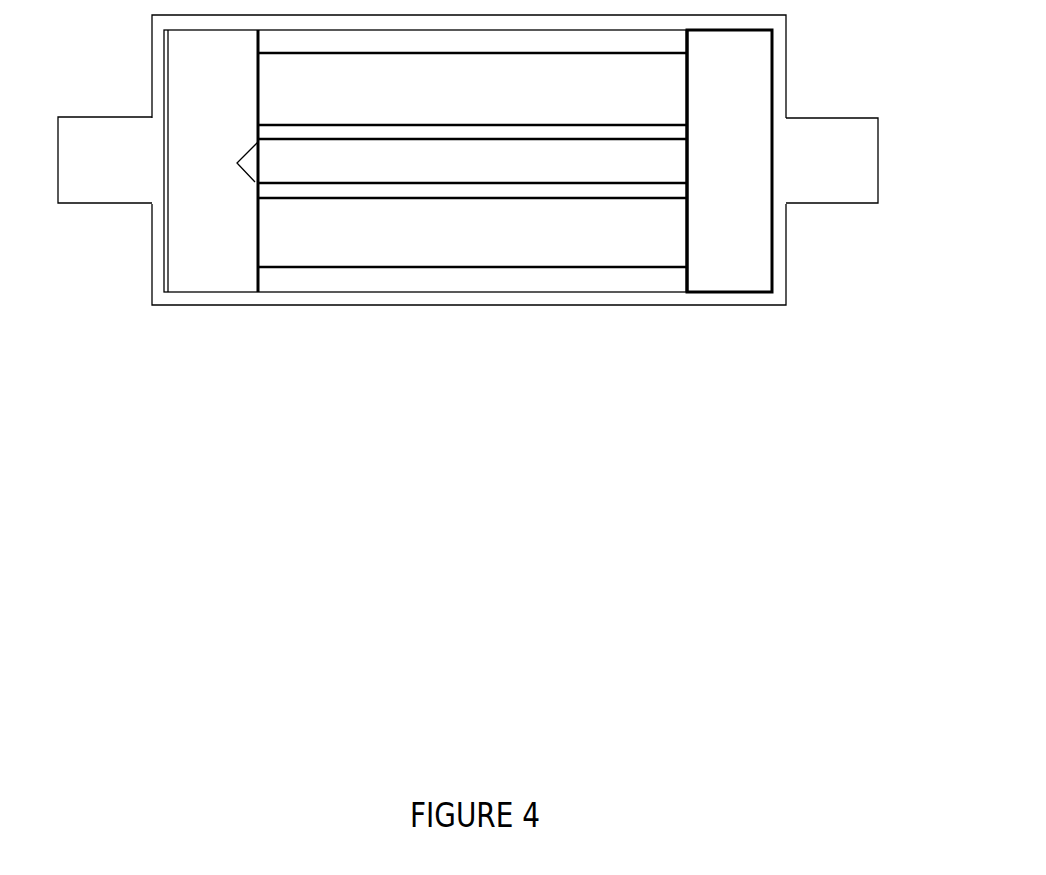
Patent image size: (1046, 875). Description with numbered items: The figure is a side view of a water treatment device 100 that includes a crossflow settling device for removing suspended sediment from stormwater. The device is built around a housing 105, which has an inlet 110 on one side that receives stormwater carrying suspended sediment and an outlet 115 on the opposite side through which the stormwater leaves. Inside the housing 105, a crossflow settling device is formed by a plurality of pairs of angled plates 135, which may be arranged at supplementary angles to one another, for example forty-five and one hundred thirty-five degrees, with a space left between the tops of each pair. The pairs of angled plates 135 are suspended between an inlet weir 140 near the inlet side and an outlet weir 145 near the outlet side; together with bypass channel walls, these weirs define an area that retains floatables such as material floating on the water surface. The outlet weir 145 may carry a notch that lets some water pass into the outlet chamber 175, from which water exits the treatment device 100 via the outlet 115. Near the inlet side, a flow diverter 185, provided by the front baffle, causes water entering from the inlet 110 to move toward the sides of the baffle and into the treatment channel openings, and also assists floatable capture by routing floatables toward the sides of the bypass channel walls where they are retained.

The treatment device 100 is at (501, 332).
The housing 105 is at (740, 304).
The inlet 110 is at (116, 195).
The outlet 115 is at (847, 178).
The angled plates 135 is at (472, 160).
The inlet weir 140 is at (256, 219).
The outlet weir 145 is at (692, 217).
The outlet chamber 175 is at (729, 161).
The flow diverter 185 is at (248, 179).